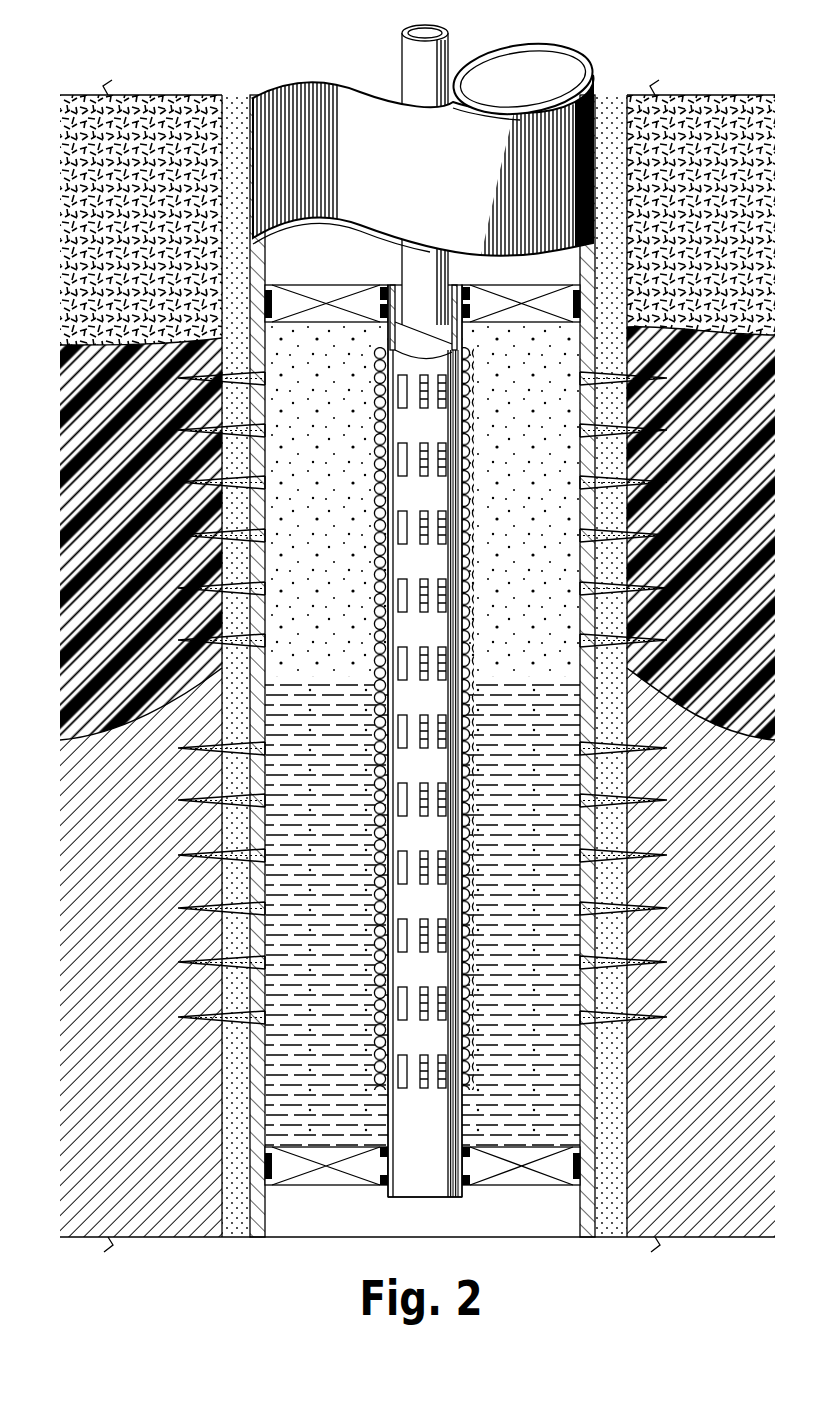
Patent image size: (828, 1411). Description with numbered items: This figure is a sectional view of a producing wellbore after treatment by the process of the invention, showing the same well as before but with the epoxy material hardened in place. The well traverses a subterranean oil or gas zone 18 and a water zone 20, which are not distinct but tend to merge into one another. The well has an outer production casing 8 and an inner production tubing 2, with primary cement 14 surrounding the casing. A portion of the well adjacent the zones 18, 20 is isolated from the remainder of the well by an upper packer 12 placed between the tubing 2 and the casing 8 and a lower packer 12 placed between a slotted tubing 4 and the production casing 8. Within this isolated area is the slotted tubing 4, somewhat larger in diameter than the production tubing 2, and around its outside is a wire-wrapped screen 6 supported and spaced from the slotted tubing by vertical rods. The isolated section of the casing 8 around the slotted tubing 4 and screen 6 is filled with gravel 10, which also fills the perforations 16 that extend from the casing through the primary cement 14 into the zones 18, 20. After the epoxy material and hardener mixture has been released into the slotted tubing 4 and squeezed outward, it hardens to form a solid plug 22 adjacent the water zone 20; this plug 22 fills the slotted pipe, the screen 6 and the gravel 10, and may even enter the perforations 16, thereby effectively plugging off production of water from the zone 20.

The production tubing 2 is at (402, 50).
The slotted tubing 4 is at (393, 1112).
The wire-wrapped screen 6 is at (470, 1052).
The production casing 8 is at (590, 66).
The gravel 10 is at (422, 499).
The packer 12 is at (252, 292).
The primary cement 14 is at (222, 185).
The perforations 16 is at (178, 585).
The oil or gas zone 18 is at (417, 533).
The water zone 20 is at (417, 960).
The solid plug 22 is at (422, 912).